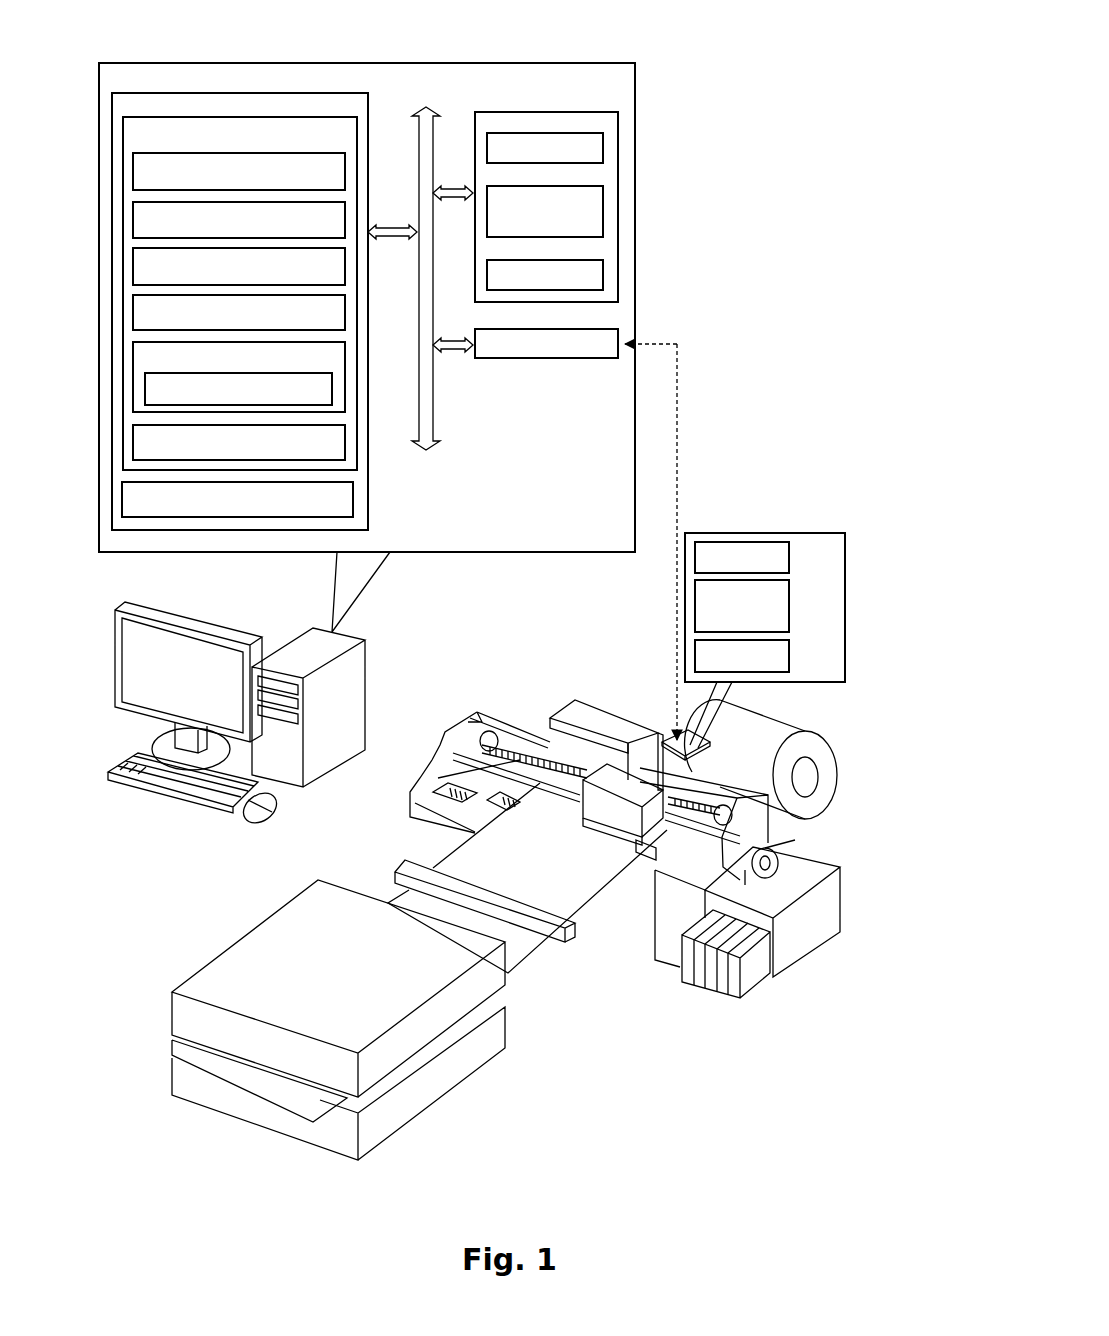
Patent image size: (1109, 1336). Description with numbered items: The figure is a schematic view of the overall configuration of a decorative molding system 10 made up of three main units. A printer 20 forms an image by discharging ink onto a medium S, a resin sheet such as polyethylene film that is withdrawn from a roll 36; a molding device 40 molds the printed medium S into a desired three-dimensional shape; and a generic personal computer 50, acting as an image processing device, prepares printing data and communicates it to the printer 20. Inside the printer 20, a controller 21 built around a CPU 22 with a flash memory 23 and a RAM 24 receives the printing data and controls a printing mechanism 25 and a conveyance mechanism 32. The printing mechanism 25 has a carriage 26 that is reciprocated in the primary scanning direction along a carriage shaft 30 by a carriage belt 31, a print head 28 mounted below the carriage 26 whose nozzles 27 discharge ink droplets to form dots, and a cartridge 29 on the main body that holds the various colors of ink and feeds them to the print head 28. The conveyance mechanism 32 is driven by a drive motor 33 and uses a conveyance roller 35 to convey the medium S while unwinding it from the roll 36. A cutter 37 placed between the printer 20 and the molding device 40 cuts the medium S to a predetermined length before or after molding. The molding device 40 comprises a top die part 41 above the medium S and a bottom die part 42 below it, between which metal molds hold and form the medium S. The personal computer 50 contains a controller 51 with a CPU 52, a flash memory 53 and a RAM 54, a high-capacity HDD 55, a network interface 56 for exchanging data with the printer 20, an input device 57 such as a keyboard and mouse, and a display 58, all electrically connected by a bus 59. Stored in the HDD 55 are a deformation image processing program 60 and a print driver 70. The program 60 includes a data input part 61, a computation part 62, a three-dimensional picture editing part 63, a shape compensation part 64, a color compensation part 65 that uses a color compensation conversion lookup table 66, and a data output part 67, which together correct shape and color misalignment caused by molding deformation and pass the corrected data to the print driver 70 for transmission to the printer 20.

The decorative molding system 10 is at (645, 57).
The printer 20 is at (589, 671).
The controller 21 is at (794, 533).
The CPU 22 is at (789, 560).
The flash memory 23 is at (789, 606).
The RAM 24 is at (789, 655).
The printing mechanism 25 is at (610, 950).
The carriage 26 is at (656, 834).
The nozzles 27 is at (656, 842).
The print head 28 is at (650, 838).
The cartridge 29 is at (750, 970).
The carriage shaft 30 is at (450, 756).
The carriage belt 31 is at (476, 746).
The conveyance mechanism 32 is at (411, 836).
The drive motor 33 is at (778, 848).
The conveyance roller 35 is at (452, 806).
The roll 36 is at (800, 730).
The cutter 37 is at (395, 877).
The molding device 40 is at (242, 910).
The top die part 41 is at (230, 942).
The bottom die part 42 is at (172, 1046).
The personal computer 50 is at (374, 652).
The controller 51 is at (549, 112).
The CPU 52 is at (548, 133).
The flash memory 53 is at (548, 186).
The RAM 54 is at (548, 260).
The HDD 55 is at (246, 93).
The network interface 56 is at (548, 329).
The input device 57 is at (243, 816).
The display 58 is at (220, 624).
The bus 59 is at (436, 425).
The deformation image processing program 60 is at (357, 132).
The data input part 61 is at (345, 174).
The computation part 62 is at (345, 219).
The 3D picture editing part 63 is at (345, 268).
The shape compensation part 64 is at (345, 314).
The color compensation part 65 is at (344, 364).
The color compensation conversion lookup table 66 is at (332, 388).
The data output part 67 is at (345, 440).
The print driver 70 is at (353, 501).
The medium S is at (543, 947).